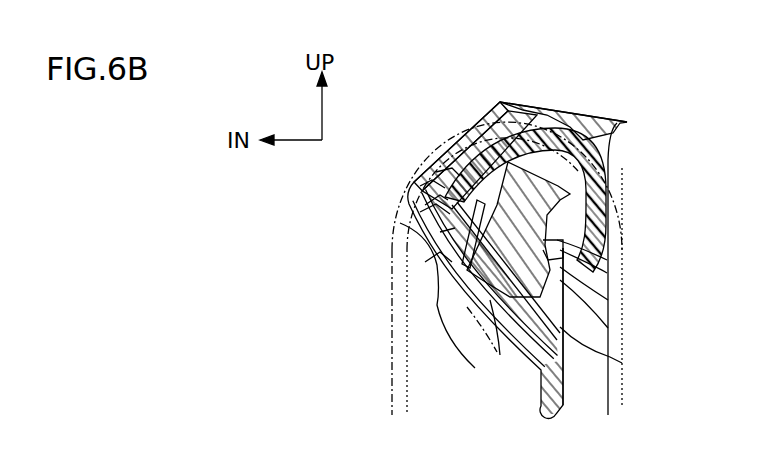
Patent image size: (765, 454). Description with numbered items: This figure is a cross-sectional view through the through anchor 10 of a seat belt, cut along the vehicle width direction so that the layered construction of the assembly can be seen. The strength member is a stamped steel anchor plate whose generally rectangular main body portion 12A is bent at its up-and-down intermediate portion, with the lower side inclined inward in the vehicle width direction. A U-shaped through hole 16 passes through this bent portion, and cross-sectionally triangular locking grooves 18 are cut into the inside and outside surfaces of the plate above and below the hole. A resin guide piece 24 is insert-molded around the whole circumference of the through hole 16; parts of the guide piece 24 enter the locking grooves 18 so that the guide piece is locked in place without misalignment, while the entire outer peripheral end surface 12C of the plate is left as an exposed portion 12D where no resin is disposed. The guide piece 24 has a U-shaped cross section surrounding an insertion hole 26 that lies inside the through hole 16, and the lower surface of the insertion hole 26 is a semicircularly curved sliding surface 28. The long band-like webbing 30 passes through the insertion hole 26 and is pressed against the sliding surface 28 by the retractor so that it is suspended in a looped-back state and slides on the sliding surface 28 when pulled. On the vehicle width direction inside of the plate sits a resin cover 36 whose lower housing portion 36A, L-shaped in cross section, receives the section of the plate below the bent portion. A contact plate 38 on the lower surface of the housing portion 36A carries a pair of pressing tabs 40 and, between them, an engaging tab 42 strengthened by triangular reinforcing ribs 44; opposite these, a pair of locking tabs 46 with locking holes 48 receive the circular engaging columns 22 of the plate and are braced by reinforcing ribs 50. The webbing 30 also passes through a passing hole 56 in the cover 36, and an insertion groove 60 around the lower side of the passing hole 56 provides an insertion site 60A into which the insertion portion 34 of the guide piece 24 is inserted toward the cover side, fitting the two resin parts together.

The through anchor 10 is at (482, 100).
The main body portion 12A is at (430, 312).
The outer peripheral end surface 12C is at (454, 341).
The exposed portion 12D is at (504, 390).
The through hole 16 is at (503, 116).
The locking grooves 18 is at (470, 170).
The engaging columns 22 is at (560, 267).
The guide piece 24 is at (420, 186).
The insertion hole 26 is at (600, 134).
The sliding surface 28 is at (603, 163).
The webbing 30 is at (392, 401).
The insertion portion 34 is at (420, 212).
The cover 36 is at (418, 297).
The housing portion 36A is at (415, 272).
The contact plate 38 is at (500, 345).
The pressing tabs 40 is at (425, 262).
The engaging tab 42 is at (478, 180).
The reinforcing ribs 44 is at (440, 232).
The locking tabs 46 is at (562, 248).
The locking holes 48 is at (560, 280).
The reinforcing ribs 50 is at (560, 318).
The passing hole 56 is at (436, 172).
The insertion groove 60 is at (425, 195).
The insertion site 60A is at (410, 200).